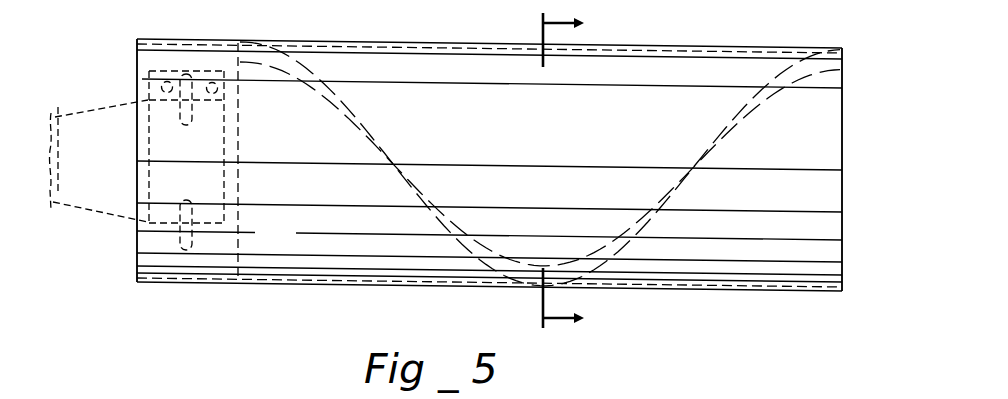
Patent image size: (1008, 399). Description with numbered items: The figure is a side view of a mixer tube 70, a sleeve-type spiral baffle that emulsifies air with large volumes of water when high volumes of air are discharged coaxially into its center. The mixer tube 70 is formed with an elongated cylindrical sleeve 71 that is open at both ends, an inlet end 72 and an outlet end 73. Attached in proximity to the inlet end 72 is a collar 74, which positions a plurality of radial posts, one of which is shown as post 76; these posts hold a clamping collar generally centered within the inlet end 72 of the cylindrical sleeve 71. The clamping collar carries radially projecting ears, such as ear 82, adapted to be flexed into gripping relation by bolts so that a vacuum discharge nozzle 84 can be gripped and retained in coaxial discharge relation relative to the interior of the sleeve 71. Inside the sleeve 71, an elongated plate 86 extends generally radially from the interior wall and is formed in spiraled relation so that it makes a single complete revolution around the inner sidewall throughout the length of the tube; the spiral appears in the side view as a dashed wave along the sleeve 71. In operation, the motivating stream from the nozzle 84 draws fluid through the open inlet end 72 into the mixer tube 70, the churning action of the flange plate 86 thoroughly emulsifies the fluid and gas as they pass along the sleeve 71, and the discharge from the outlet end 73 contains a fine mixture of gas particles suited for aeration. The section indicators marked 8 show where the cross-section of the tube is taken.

The mixer tube 70 is at (286, 33).
The cylindrical sleeve 71 is at (355, 286).
The open end 72 is at (137, 237).
The outlet end 73 is at (842, 213).
The collar 74 is at (172, 45).
The radial post 76 is at (193, 233).
The nozzle 84 is at (90, 108).
The elongated plate 86 is at (352, 117).
The section line 8- 8 is at (578, 172).
The radially projecting ear 82 is at (117, 393).